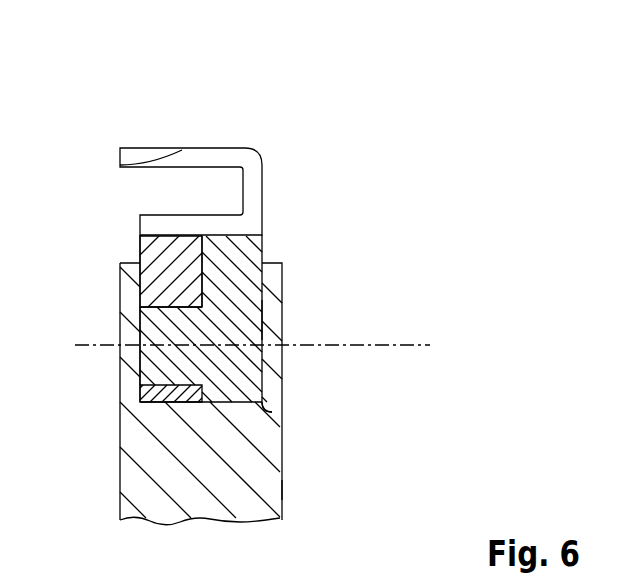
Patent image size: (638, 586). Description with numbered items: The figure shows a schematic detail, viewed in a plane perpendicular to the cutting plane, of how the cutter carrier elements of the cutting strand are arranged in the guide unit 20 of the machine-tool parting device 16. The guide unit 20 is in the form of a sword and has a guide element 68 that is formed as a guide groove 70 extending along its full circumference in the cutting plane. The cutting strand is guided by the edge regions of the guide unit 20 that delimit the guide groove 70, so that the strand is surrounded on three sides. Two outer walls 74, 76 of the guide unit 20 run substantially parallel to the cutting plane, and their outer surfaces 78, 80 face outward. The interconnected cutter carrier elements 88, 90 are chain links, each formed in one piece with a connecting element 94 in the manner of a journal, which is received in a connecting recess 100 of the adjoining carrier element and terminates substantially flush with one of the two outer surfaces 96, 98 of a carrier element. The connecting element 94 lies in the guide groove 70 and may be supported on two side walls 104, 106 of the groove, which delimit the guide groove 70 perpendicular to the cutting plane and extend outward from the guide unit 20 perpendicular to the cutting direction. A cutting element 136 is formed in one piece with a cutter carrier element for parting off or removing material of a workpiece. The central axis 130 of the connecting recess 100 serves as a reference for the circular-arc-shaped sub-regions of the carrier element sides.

The machine-tool parting device 16 is at (372, 88).
The cutting element 136 is at (236, 148).
The outer surface 98 is at (140, 245).
The cutter carrier element 88 is at (160, 290).
The side wall 106 is at (150, 315).
The cutter carrier element 90 is at (262, 250).
The outer surface 96 is at (266, 271).
The side wall 104 is at (262, 318).
The connecting element 94 is at (150, 357).
The connecting recess 100 is at (150, 394).
The outer wall 76 is at (122, 420).
The outer surface 78 is at (282, 440).
The outer surface 80 is at (122, 478).
The guide element 68 is at (250, 420).
The guide groove 70 is at (267, 407).
The guide unit 20 is at (265, 478).
The outer wall 74 is at (282, 490).
The central axis 130 is at (423, 345).